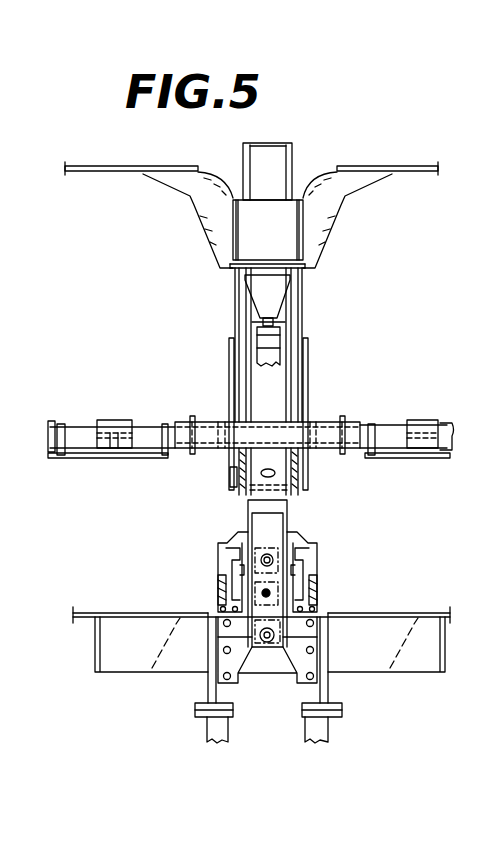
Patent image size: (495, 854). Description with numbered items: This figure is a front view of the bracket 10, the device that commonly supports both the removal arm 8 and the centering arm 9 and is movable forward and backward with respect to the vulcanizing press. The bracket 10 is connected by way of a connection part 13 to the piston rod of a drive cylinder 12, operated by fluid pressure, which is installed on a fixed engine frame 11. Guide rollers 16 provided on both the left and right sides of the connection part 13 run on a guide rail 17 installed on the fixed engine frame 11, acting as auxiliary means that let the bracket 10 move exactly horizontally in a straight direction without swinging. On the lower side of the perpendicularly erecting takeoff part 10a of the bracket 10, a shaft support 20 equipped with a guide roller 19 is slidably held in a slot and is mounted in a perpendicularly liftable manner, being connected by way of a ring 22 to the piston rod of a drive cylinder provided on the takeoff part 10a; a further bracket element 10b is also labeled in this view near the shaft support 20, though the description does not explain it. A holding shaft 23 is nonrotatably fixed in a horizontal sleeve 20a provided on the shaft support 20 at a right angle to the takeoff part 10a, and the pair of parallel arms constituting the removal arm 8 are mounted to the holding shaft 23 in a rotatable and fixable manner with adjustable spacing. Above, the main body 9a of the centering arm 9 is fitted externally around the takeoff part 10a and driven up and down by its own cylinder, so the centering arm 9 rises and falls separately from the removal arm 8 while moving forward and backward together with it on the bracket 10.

The removal arm 8 is at (102, 415).
The centering arm 9 is at (183, 208).
The main body of the centering arm 9a is at (283, 232).
The bracket 10 is at (293, 174).
The takeoff part 10a is at (283, 290).
The pin 10b is at (268, 450).
The fixed engine frame 11 is at (322, 640).
The drive cylinder 12 is at (317, 580).
The connection part 13 is at (290, 520).
The guide rollers 16 is at (228, 573).
The guide rail 17 is at (218, 592).
The guide roller 19 is at (232, 478).
The shaft support 20 is at (232, 391).
The horizontal sleeve 20a is at (277, 422).
The ring 22 is at (231, 306).
The holding shaft 23 is at (147, 428).